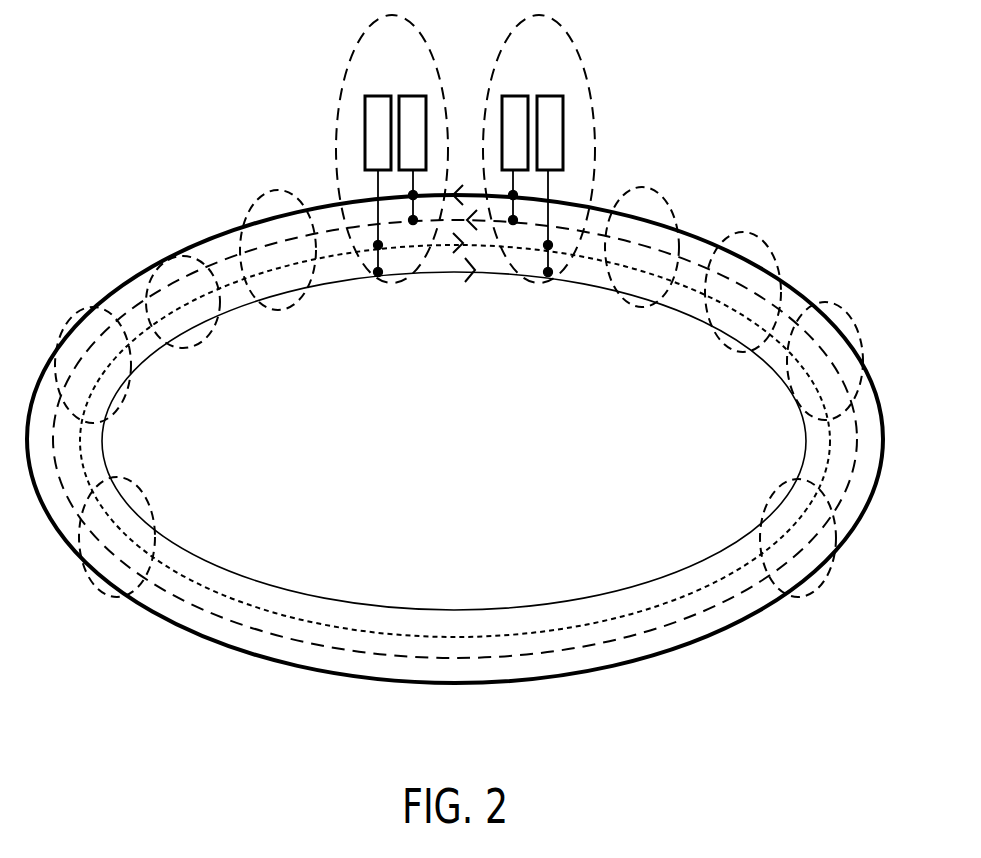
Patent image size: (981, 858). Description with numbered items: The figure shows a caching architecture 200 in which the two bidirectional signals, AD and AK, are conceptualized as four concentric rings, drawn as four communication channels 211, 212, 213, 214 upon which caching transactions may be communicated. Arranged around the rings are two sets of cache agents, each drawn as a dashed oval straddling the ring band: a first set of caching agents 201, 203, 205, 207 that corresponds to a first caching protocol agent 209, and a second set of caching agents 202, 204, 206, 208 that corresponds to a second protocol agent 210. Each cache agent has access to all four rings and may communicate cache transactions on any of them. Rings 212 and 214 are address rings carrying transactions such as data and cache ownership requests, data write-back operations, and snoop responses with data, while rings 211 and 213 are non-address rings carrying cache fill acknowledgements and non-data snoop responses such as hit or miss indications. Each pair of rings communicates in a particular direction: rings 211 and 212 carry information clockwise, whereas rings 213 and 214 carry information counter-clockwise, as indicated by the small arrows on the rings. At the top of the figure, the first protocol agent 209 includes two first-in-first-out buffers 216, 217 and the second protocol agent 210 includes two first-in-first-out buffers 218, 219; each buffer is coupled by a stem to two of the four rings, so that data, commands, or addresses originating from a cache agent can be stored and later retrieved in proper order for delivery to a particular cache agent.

The caching architecture 200 is at (442, 463).
The caching agent 201 is at (98, 551).
The caching agent 202 is at (74, 379).
The caching agent 203 is at (163, 304).
The caching agent 204 is at (258, 261).
The caching agent 205 is at (623, 262).
The caching agent 206 is at (724, 306).
The caching agent 207 is at (804, 377).
The caching agent 208 is at (779, 551).
The first caching protocol agent 209 is at (373, 76).
The second protocol agent 210 is at (519, 76).
The ring 211 is at (437, 610).
The ring 212 is at (460, 637).
The ring 213 is at (442, 657).
The ring 214 is at (458, 683).
The first-in-first-out buffer 216 is at (363, 110).
The first-in-first-out buffer 217 is at (399, 140).
The first-in-first-out buffer 218 is at (555, 115).
The first-in-first-out buffer 219 is at (528, 143).